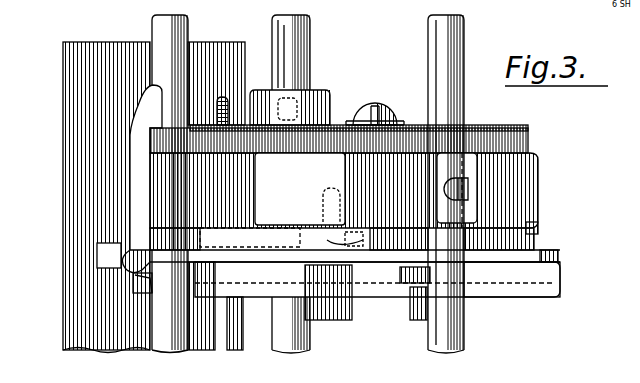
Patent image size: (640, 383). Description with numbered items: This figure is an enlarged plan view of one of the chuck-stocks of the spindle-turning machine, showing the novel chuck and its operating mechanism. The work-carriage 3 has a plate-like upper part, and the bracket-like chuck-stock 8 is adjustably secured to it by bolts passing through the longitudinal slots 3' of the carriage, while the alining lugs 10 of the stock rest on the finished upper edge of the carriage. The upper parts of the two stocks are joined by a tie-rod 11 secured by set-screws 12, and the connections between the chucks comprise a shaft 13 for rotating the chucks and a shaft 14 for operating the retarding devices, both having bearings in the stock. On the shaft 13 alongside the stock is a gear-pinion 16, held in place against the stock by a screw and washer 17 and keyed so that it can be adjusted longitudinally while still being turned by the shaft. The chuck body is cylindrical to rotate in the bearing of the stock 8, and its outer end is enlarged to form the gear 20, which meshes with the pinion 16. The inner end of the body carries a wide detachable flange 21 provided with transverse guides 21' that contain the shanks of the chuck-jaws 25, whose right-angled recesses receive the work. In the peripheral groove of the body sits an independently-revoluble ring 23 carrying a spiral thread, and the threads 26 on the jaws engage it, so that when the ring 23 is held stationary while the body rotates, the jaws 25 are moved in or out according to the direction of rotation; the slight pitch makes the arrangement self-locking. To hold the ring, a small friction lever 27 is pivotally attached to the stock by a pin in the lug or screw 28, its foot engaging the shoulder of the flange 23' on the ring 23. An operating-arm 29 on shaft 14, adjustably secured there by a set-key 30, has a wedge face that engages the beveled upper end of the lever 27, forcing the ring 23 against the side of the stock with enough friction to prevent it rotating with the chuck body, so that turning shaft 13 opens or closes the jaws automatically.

The work-carriage 3 is at (140, 197).
The longitudinal slots 3' is at (240, 93).
The chuck-stock 8 is at (536, 205).
The alining lugs 10 is at (140, 116).
The tie-rod 11 is at (464, 333).
The set-screws 12 is at (470, 188).
The shaft 13 is at (311, 342).
The shaft 14 is at (150, 324).
The gear-pinion 16 is at (213, 130).
The screw and washer 17 is at (388, 116).
The gear 20 is at (497, 125).
The flange 21 is at (374, 306).
The transverse guides 21' is at (512, 292).
The independently-revoluble ring 23 is at (522, 239).
The flange 23' is at (549, 217).
The chuck-jaws 25 is at (410, 296).
The threads 26 is at (552, 256).
The friction lever 27 is at (393, 262).
The lug or screw 28 is at (368, 216).
The operating-arm 29 is at (262, 232).
The set-key 30 is at (97, 256).